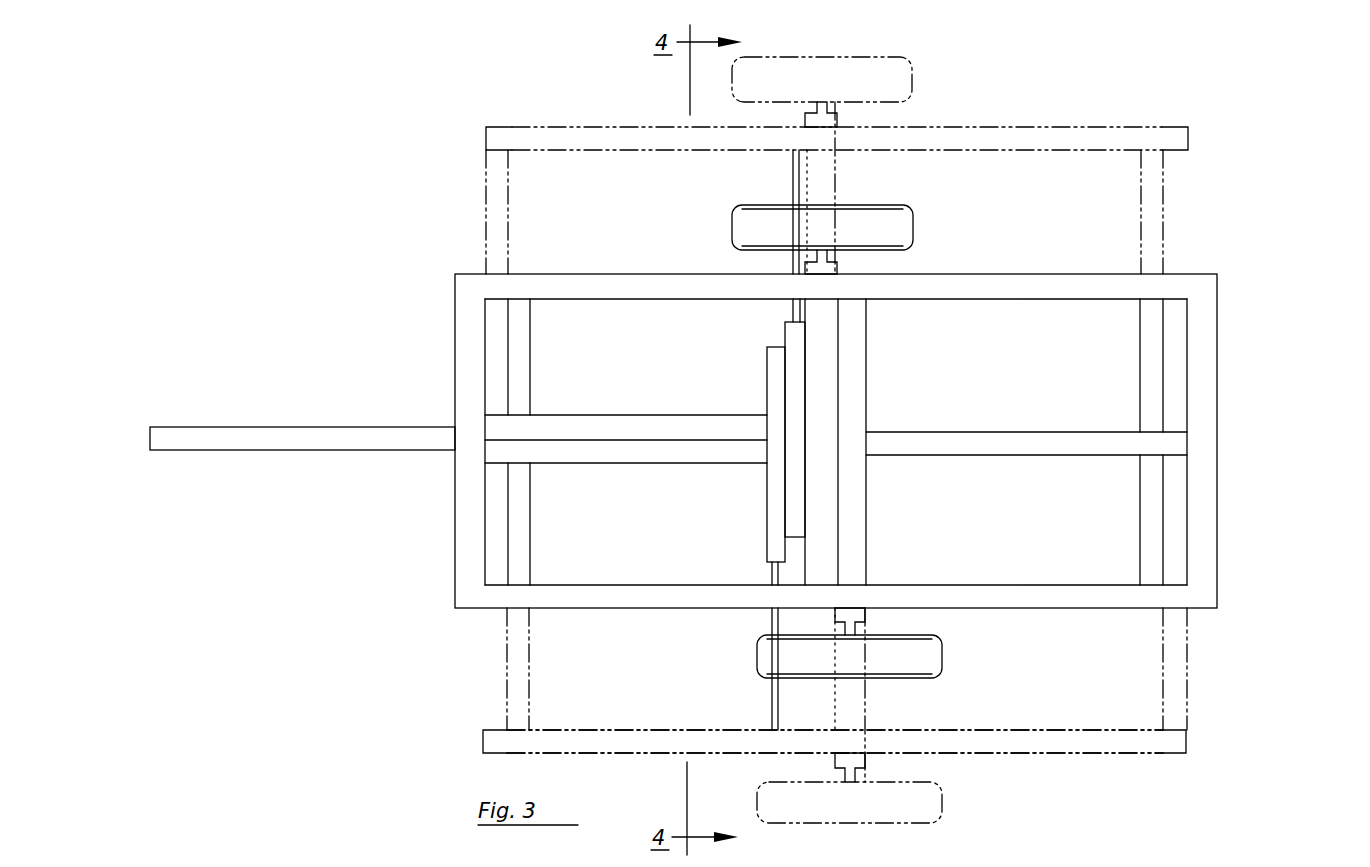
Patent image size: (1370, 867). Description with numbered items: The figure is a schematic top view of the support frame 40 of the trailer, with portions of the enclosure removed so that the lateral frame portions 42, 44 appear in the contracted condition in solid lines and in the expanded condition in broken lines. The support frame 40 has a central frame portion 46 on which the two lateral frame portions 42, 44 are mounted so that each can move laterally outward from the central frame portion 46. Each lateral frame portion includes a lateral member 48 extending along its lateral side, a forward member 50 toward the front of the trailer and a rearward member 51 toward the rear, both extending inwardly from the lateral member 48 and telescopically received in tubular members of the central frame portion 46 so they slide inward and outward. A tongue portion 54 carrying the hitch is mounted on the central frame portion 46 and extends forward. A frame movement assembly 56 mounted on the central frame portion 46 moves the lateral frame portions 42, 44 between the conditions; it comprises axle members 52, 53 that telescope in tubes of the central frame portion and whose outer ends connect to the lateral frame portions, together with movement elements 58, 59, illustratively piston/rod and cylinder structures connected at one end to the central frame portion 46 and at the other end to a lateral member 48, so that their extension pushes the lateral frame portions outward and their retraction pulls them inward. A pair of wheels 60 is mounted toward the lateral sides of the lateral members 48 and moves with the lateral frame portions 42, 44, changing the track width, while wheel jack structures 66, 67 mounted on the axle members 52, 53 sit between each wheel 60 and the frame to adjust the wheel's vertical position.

The support frame 40 is at (1215, 252).
The lateral frame portion 42 is at (1205, 171).
The lateral frame portion 44 is at (1212, 671).
The central frame portion 46 is at (1245, 381).
The lateral member 48 is at (652, 128).
The forward member 50 is at (486, 211).
The rearward member 51 is at (1165, 215).
The axle member 52 is at (840, 183).
The axle member 53 is at (865, 697).
The tongue portion 54 is at (348, 432).
The frame movement assembly 56 is at (740, 491).
The movement element 58 is at (750, 329).
The movement element 59 is at (736, 561).
The wheel 60 is at (882, 84).
The wheel jack structure 66 is at (830, 268).
The wheel jack structure 67 is at (858, 617).